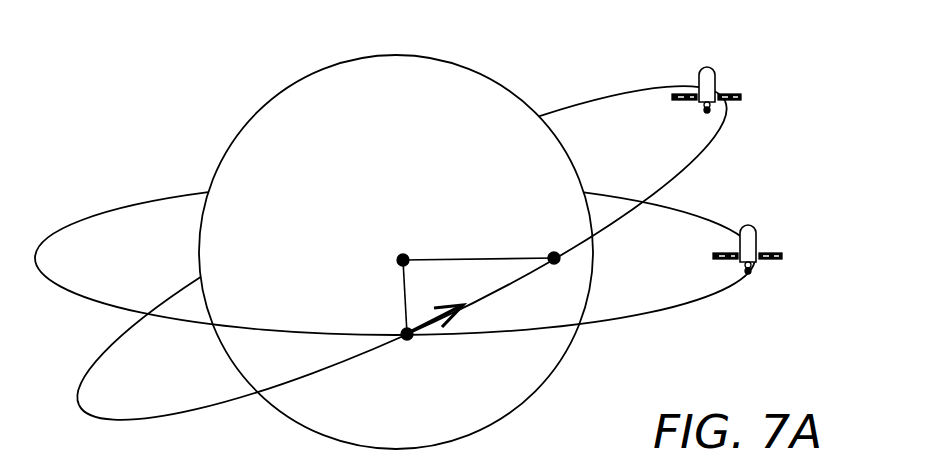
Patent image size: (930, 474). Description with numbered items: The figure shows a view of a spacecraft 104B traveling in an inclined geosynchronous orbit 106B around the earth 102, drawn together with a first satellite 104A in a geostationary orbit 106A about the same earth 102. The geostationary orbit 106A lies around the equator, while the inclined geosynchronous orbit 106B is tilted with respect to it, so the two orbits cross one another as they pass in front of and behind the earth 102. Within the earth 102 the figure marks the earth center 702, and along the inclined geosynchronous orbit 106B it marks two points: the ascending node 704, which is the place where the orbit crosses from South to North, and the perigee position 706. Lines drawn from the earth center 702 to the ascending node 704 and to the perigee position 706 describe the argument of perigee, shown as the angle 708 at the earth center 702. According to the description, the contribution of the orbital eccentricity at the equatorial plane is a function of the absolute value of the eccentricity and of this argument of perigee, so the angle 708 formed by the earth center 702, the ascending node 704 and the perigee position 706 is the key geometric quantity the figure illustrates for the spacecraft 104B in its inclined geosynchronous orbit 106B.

The earth 102 is at (233, 135).
The first satellite 104A is at (757, 229).
The spacecraft 104B is at (712, 80).
The geostationary orbit 106A is at (710, 222).
The inclined geosynchronous orbit 106B is at (603, 97).
The earth center 702 is at (403, 260).
The ascending node 704 is at (407, 334).
The perigee position 706 is at (554, 258).
The angle 708 is at (433, 277).